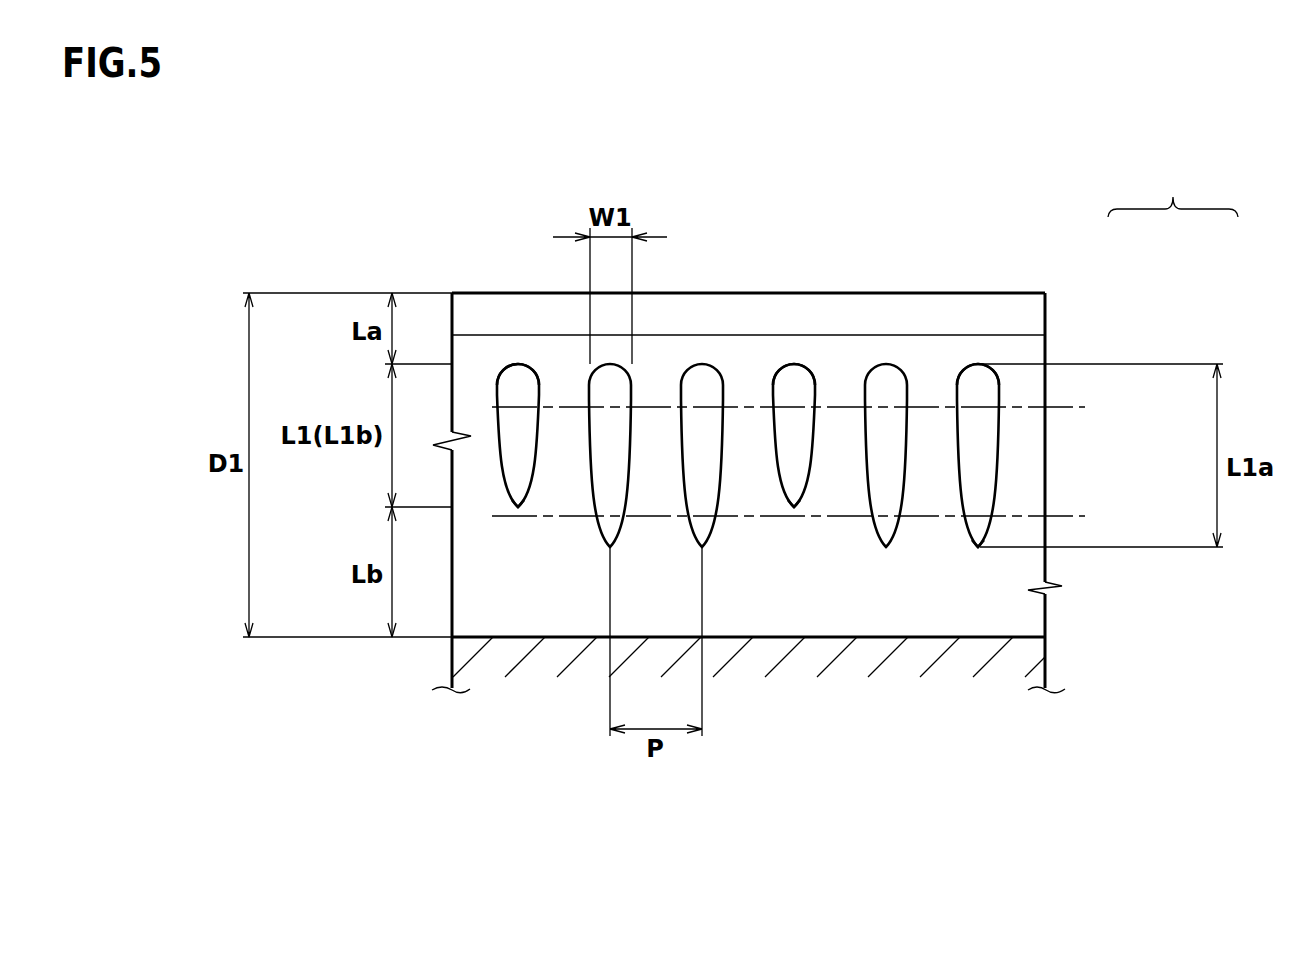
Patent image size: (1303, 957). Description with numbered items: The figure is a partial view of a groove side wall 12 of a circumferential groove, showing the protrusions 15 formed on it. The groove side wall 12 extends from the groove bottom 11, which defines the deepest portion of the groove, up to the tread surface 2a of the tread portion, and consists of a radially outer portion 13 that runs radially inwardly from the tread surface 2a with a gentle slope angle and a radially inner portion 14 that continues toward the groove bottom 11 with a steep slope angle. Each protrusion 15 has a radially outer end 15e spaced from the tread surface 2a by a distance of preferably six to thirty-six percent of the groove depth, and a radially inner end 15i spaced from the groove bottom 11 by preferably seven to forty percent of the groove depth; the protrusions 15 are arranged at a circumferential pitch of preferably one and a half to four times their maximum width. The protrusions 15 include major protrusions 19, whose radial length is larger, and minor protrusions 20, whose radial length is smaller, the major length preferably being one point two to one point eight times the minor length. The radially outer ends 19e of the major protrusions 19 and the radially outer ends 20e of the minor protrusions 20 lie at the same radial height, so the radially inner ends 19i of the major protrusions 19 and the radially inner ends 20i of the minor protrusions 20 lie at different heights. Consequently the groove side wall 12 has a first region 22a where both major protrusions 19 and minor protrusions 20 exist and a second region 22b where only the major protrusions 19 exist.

The tread surface 2a is at (707, 293).
The groove bottom 11 is at (830, 637).
The groove side wall 12 is at (1173, 191).
The radially outer portion 13 is at (1027, 322).
The radially inner portion 14 is at (1027, 355).
The protrusion 15 is at (519, 393).
The radially outer end 15e is at (518, 363).
The radially inner end 15i is at (519, 507).
The major protrusion 19 is at (885, 387).
The radially outer end of major protrusion 19e is at (972, 363).
The radially inner end of major protrusion 19i is at (978, 547).
The minor protrusion 20 is at (793, 387).
The radially outer end of minor protrusion 20e is at (793, 363).
The radially inner end of minor protrusion 20i is at (795, 507).
The first region 22a is at (1085, 407).
The second region 22b is at (1085, 516).